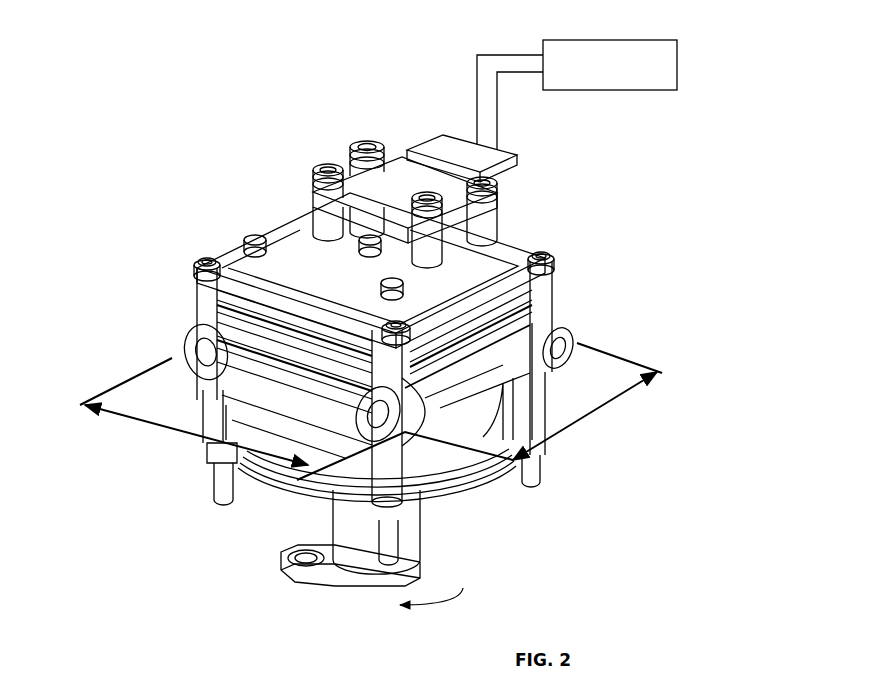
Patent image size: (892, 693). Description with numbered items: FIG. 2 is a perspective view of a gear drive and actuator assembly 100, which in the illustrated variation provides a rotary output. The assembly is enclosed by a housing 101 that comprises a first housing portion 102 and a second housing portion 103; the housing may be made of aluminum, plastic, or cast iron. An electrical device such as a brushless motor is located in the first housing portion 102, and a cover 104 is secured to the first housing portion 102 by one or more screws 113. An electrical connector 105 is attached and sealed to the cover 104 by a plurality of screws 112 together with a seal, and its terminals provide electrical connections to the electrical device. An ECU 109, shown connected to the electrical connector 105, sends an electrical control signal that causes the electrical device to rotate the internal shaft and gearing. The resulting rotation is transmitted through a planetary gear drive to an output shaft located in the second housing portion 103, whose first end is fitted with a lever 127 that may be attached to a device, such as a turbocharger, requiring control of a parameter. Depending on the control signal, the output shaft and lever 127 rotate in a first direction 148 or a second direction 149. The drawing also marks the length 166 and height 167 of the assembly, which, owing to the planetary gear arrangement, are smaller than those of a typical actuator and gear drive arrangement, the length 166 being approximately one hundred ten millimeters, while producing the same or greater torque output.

The gear drive and actuator assembly 100 is at (377, 361).
The housing 101 is at (377, 361).
The first housing portion 102 is at (558, 307).
The second housing portion 103 is at (457, 490).
The cover 104 is at (238, 247).
The electrical connector 105 is at (512, 181).
The ECU 109 is at (593, 93).
The screws 112 is at (346, 148).
The screws 113 is at (195, 262).
The lever 127 is at (270, 560).
The first direction 148 is at (463, 588).
The second direction 149 is at (411, 598).
The length 166 is at (296, 419).
The height 167 is at (587, 401).